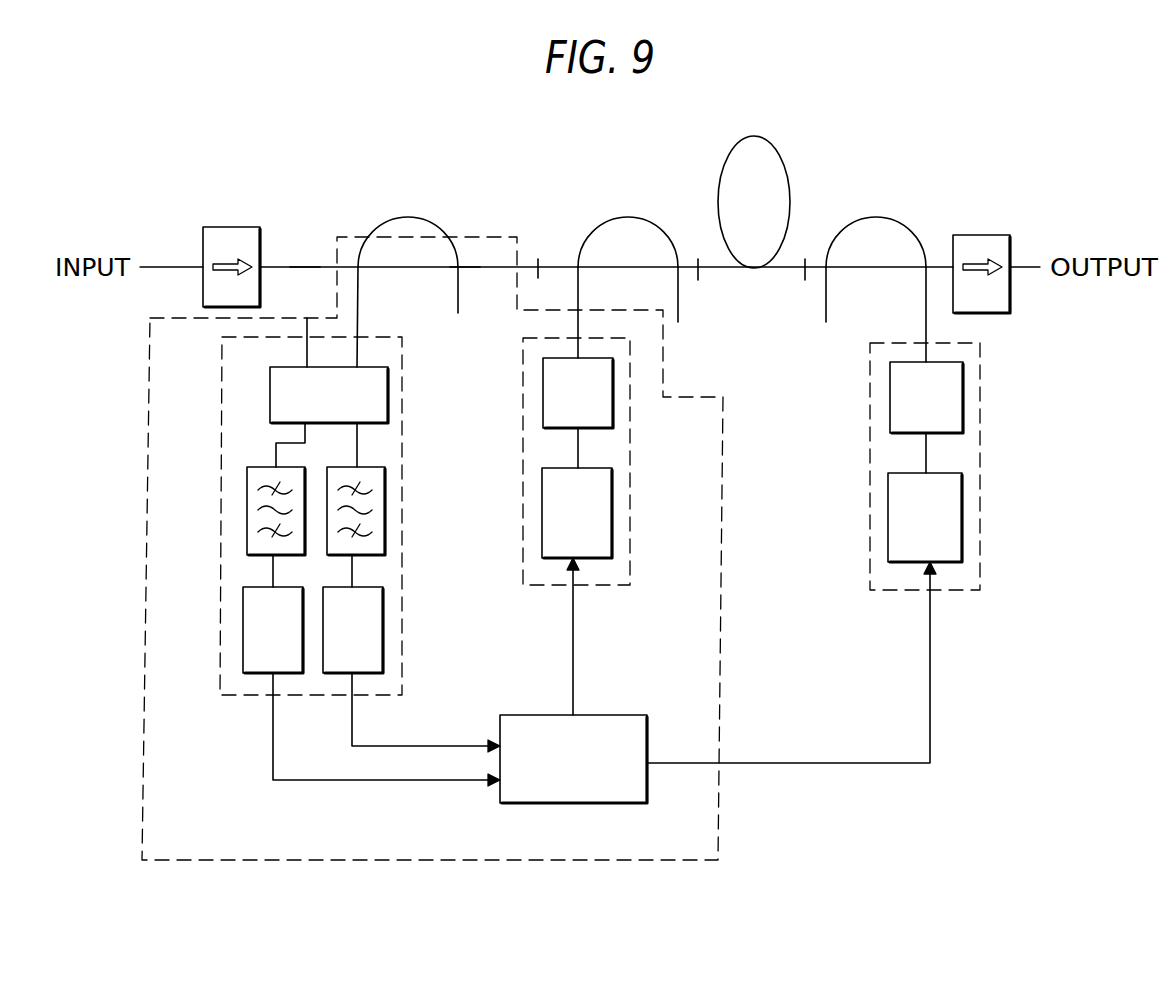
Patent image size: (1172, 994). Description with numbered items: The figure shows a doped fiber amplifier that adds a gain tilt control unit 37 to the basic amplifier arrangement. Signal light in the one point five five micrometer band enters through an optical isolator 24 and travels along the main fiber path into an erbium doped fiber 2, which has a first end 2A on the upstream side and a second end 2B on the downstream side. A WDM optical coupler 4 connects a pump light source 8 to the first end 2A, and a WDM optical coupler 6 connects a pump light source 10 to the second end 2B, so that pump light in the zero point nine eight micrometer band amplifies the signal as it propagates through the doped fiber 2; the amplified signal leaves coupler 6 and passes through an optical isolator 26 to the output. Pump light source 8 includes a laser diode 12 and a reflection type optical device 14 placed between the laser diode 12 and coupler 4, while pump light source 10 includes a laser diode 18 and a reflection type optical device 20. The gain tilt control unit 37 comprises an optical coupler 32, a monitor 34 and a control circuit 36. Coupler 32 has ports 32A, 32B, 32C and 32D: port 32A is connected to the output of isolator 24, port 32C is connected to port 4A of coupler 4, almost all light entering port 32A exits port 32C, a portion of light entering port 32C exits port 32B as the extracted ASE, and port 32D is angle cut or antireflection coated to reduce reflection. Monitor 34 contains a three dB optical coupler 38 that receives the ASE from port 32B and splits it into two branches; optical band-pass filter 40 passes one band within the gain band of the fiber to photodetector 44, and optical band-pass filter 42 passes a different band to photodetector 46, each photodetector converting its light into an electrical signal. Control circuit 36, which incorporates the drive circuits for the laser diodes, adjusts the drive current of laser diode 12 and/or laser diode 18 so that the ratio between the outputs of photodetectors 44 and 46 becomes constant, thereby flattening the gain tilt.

The doped fiber 2 is at (769, 137).
The first end 2A is at (714, 284).
The second end 2B is at (784, 284).
The WDM optical coupler 4 is at (613, 240).
The port 4A is at (557, 265).
The WDM optical coupler 6 is at (900, 240).
The pump light source 8 is at (628, 500).
The pump light source 10 is at (867, 505).
The laser diode 12 is at (542, 515).
The reflection type optical device 14 is at (543, 403).
The laser diode 18 is at (962, 522).
The reflection type optical device 20 is at (963, 410).
The optical isolator 24 is at (218, 226).
The optical isolator 26 is at (968, 235).
The optical coupler 32 is at (388, 245).
The port 32A is at (302, 260).
The port 32B is at (363, 296).
The port 32C is at (463, 265).
The port 32D is at (450, 315).
The monitor 34 is at (402, 578).
The control circuit 36 is at (528, 715).
The gain tilt control unit 37 is at (720, 832).
The optical coupler 38 is at (270, 407).
The optical band-pass filter 40 is at (247, 516).
The optical band-pass filter 42 is at (385, 478).
The photodetector 44 is at (243, 621).
The photodetector 46 is at (383, 640).